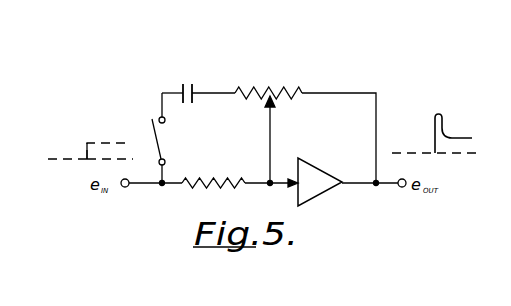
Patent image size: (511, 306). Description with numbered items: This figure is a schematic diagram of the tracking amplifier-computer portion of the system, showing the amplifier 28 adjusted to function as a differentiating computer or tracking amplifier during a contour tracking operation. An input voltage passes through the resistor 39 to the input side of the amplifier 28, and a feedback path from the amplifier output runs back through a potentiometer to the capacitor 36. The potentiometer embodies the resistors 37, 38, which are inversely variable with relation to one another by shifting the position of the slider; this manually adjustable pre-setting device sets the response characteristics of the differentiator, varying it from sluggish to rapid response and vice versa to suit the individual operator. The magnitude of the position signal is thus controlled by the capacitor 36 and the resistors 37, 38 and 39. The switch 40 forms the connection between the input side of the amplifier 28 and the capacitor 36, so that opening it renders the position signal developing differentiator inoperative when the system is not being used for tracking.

The amplifier 28 is at (364, 85).
The capacitor 36 is at (181, 84).
The resistor 37 is at (262, 83).
The resistor 38 is at (301, 83).
The resistor 39 is at (230, 177).
The switch 40 is at (156, 137).